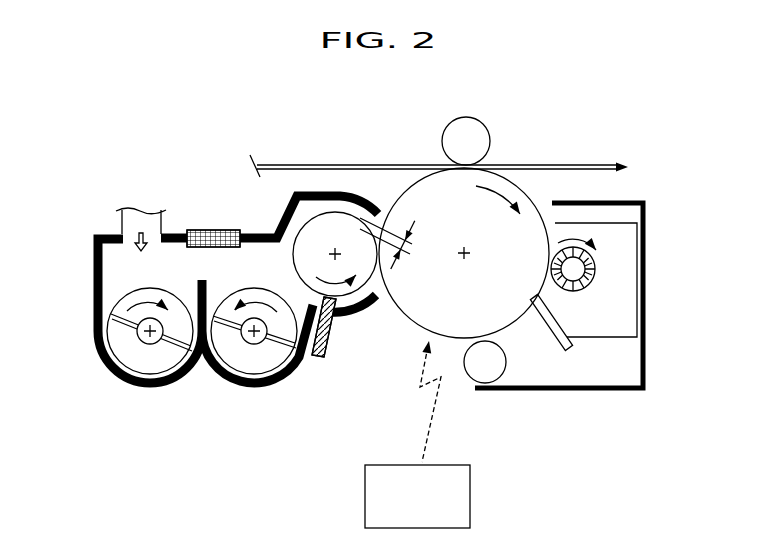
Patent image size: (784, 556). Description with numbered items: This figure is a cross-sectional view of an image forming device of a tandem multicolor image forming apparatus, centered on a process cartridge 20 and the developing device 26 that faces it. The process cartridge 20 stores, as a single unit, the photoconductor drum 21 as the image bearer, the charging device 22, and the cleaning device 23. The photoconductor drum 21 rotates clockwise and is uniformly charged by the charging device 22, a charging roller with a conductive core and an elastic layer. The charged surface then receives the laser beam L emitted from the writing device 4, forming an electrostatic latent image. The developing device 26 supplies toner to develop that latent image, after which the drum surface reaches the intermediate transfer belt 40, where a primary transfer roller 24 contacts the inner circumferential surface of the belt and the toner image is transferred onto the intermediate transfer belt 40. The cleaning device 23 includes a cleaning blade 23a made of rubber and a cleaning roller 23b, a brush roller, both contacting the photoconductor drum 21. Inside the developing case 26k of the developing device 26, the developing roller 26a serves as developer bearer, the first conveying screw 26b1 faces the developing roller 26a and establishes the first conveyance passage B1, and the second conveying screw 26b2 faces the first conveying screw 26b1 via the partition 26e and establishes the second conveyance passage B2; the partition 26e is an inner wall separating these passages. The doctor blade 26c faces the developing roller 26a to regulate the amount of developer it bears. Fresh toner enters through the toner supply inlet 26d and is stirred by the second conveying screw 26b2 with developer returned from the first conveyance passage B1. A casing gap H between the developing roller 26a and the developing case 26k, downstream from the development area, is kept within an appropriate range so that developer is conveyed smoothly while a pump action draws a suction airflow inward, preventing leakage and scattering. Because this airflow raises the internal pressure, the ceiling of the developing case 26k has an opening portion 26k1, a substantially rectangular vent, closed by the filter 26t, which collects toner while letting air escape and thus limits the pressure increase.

The developing device 26 is at (204, 286).
The developing case 26k is at (302, 372).
The partition 26e is at (200, 293).
The toner supply inlet 26d is at (126, 246).
The filter 26t is at (198, 192).
The opening portion 26k1 is at (212, 230).
The second conveying screw 26b2 is at (152, 367).
The first conveying screw 26b1 is at (256, 368).
The developing roller 26a is at (323, 228).
The doctor blade 26c is at (331, 330).
The first conveyance passage B1 is at (253, 280).
The second conveyance passage B2 is at (110, 292).
The photoconductor drum 21 is at (420, 195).
The casing gap H is at (396, 243).
The primary transfer roller 24 is at (473, 127).
The intermediate transfer belt 40 is at (545, 162).
The charging device 22 is at (489, 360).
The process cartridge 20 is at (598, 337).
The cleaning device 23 is at (636, 280).
The cleaning roller 23b is at (588, 279).
The cleaning blade 23a is at (541, 354).
The writing device 4 is at (365, 490).
The laser beam L is at (424, 443).